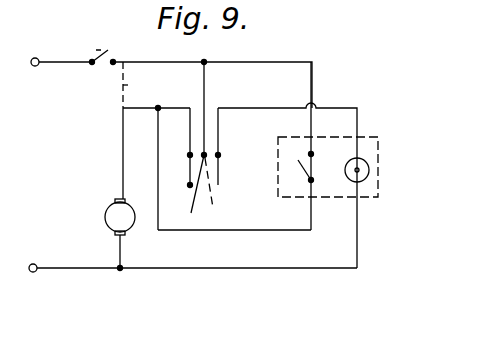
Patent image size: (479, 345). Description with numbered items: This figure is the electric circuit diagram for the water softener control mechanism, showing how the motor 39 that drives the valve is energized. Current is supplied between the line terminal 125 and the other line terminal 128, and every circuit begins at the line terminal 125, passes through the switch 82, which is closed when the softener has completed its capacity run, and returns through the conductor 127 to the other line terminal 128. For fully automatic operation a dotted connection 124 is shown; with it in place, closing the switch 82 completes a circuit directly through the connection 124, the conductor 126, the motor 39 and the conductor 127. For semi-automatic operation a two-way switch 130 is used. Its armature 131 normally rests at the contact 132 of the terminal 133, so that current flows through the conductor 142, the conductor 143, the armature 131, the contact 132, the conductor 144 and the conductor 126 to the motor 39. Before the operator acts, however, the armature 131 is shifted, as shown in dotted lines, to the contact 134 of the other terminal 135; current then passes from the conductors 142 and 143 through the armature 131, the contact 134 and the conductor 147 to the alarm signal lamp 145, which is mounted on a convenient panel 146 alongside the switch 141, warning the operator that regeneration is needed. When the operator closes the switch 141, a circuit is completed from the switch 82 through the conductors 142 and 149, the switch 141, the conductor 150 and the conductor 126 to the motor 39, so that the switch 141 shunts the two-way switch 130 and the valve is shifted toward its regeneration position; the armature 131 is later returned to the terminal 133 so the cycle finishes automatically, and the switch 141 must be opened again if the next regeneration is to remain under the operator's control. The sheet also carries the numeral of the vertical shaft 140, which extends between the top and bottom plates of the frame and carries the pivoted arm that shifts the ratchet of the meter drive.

The line terminal 125 is at (37, 58).
The switch 82 is at (108, 49).
The conductor 142 is at (157, 62).
The conductor 143 is at (205, 88).
The conductor 149 is at (280, 63).
The vertical shaft 140 is at (375, 2).
The dotted connection 124 is at (128, 85).
The conductor 144 is at (168, 107).
The conductor 147 is at (250, 108).
The conductor 126 is at (121, 152).
The motor 39 is at (104, 216).
The line terminal 128 is at (35, 262).
The conductor 127 is at (73, 270).
The two-way switch 130 is at (224, 143).
The conductor 150 is at (220, 230).
The terminal 133 is at (189, 154).
The contact 132 is at (193, 188).
The armature 131 is at (190, 200).
The contact 134 is at (211, 185).
The terminal 135 is at (220, 156).
The switch 141 is at (300, 167).
The panel 146 is at (360, 200).
The alarm signal lamp 145 is at (367, 165).